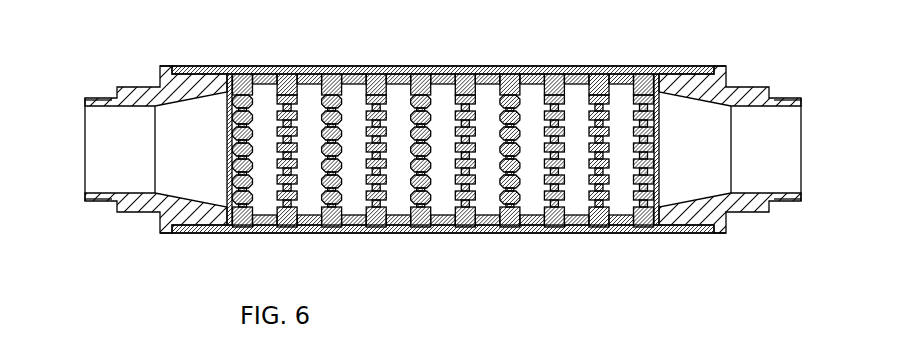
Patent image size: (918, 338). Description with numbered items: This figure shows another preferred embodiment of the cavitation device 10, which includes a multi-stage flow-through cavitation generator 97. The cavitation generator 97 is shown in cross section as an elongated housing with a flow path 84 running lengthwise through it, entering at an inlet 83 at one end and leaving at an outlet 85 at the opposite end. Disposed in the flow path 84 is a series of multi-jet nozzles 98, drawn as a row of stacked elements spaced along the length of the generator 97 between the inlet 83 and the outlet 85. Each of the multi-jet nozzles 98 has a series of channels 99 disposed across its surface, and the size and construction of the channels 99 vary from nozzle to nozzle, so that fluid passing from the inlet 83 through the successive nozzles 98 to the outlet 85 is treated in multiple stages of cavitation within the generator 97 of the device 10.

The cavitation device 10 is at (272, 48).
The multi-stage cavitation generator 97 is at (443, 132).
The inlet 83 is at (125, 149).
The flow path 84 is at (93, 149).
The outlet 85 is at (757, 149).
The multi-jet nozzles 98 is at (465, 180).
The channels 99 is at (436, 182).